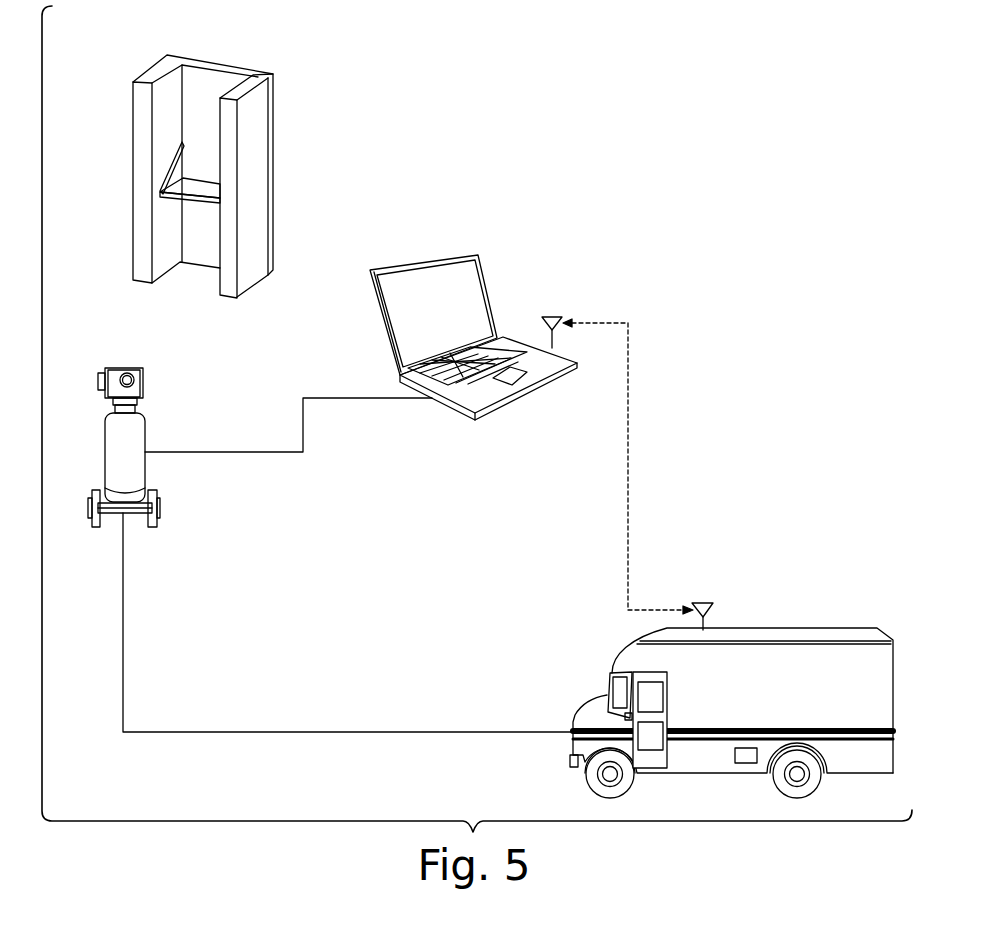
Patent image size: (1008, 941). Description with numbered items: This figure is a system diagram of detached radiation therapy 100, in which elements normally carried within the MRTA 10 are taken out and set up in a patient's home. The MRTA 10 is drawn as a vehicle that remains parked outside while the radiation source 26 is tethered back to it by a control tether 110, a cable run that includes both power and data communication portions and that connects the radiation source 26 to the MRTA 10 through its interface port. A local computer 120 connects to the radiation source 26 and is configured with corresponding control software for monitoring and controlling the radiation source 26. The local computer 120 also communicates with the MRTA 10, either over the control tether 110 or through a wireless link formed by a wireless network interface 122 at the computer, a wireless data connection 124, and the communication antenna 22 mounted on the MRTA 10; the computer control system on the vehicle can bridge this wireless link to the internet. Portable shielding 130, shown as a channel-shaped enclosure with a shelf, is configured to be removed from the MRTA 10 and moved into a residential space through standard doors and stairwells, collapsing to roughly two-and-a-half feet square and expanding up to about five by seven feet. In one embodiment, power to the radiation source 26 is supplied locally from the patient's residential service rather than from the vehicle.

The detached radiation therapy system 100 is at (624, 152).
The portable shielding 130 is at (260, 177).
The local computer 120 is at (378, 316).
The wireless network interface 122 is at (552, 313).
The wireless data connection 124 is at (628, 438).
The radiation source 26 is at (102, 438).
The control tether 110 is at (315, 733).
The communication antenna 22 is at (703, 601).
The MRTA 10 is at (803, 617).